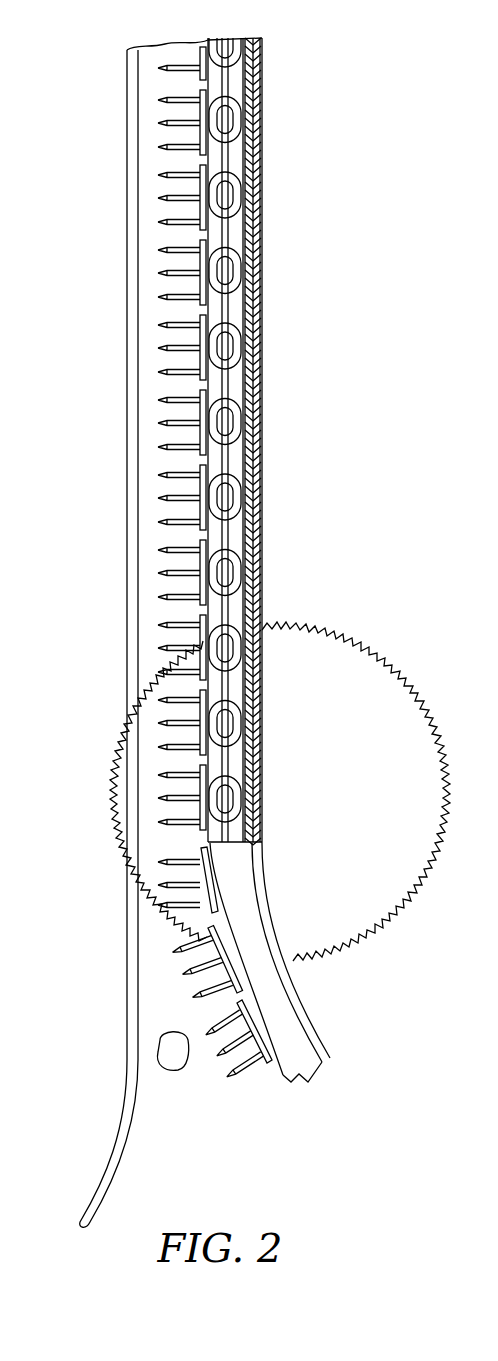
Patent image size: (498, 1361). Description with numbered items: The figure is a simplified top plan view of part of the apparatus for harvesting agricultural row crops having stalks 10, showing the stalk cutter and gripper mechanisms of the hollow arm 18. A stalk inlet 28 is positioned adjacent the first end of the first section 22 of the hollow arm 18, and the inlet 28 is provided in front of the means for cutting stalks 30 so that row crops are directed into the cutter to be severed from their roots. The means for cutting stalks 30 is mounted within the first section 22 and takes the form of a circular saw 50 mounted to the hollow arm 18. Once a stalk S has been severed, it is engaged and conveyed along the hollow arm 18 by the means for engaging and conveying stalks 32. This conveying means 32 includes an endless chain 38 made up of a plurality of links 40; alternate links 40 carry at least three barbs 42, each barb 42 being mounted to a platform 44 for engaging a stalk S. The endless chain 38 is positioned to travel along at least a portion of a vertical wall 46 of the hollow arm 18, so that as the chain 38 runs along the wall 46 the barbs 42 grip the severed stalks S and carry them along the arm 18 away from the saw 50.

The apparatus for harvesting agricultural row crops having stalks 10 is at (263, 576).
The hollow arm 18 is at (106, 224).
The first section 22 is at (134, 444).
The stalk inlet 28 is at (123, 1152).
The means for cutting stalks 30 is at (402, 671).
The means for engaging and conveying stalks 32 is at (148, 542).
The endless chain 38 is at (250, 397).
The links 40 is at (248, 162).
The barb 42 is at (178, 147).
The platform 44 is at (201, 167).
The vertical wall 46 is at (238, 230).
The circular saw 50 is at (110, 748).
The stalk S is at (185, 1072).